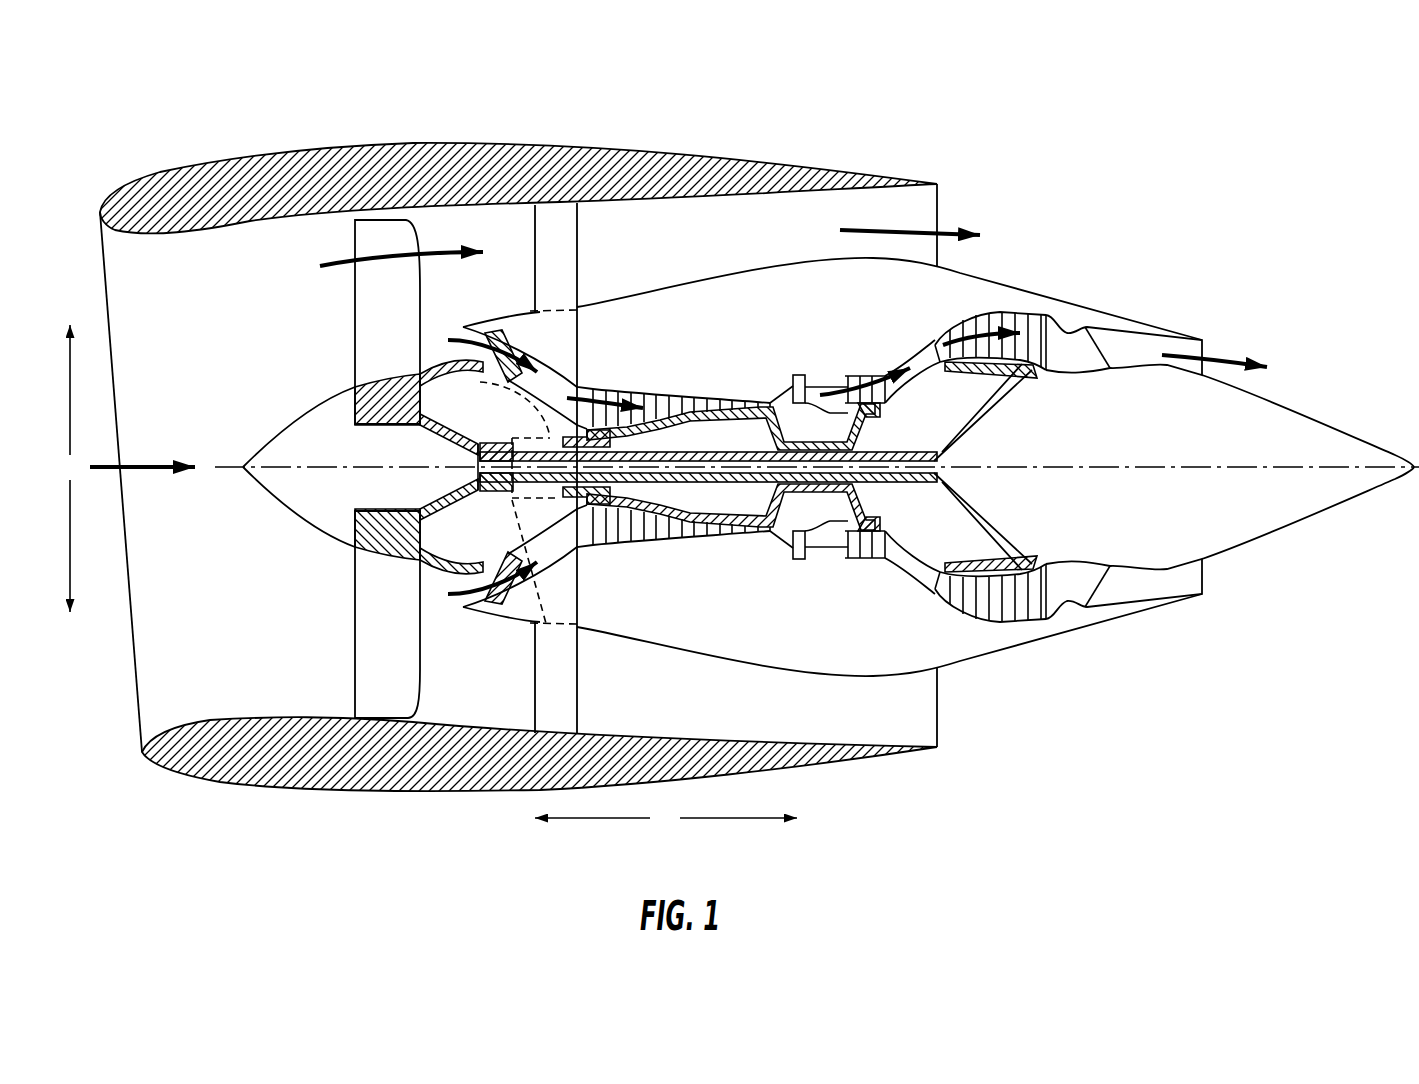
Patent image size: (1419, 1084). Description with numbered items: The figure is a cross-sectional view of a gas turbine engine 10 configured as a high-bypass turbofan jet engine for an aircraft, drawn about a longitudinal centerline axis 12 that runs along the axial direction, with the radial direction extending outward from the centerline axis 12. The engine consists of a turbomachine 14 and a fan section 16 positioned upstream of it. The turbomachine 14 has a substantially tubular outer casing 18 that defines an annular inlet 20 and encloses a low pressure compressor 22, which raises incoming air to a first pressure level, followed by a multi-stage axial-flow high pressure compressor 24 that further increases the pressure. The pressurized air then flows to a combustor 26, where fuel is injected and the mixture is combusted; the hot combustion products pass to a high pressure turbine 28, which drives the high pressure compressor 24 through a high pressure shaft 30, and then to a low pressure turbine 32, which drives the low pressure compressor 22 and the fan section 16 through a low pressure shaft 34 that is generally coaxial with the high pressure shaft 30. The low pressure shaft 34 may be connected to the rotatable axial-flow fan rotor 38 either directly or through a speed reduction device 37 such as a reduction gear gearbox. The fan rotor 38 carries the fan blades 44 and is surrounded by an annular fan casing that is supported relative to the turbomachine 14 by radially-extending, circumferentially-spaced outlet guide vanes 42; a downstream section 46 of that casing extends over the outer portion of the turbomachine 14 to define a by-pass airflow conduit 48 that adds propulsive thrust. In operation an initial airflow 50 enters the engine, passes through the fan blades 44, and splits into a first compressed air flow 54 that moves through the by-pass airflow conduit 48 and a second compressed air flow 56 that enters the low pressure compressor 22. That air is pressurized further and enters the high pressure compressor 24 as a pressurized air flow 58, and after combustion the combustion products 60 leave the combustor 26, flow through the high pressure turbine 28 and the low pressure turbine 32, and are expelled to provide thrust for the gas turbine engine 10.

The gas turbine engine 10 is at (1080, 178).
The centerline axis 12 is at (1142, 467).
The turbomachine 14 is at (817, 333).
The fan section 16 is at (402, 126).
The outer casing 18 is at (773, 665).
The annular inlet 20 is at (470, 596).
The low pressure compressor 22 is at (533, 560).
The high pressure compressor 24 is at (612, 542).
The combustor 26 is at (817, 555).
The high pressure turbine 28 is at (887, 553).
The high pressure shaft 30 is at (873, 420).
The low pressure turbine 32 is at (1203, 350).
The low pressure shaft 34 is at (538, 448).
The speed reduction device 37 is at (512, 498).
The fan rotor 38 is at (420, 427).
The outlet guide vanes 42 is at (577, 268).
The fan blades 44 is at (355, 660).
The downstream section 46 is at (763, 157).
The by-pass airflow conduit 48 is at (735, 249).
The initial airflow 50 is at (142, 442).
The first compressed air flow 54 is at (337, 270).
The second compressed air flow 56 is at (448, 338).
The pressurized air flow 58 is at (598, 397).
The combustion products 60 is at (862, 375).